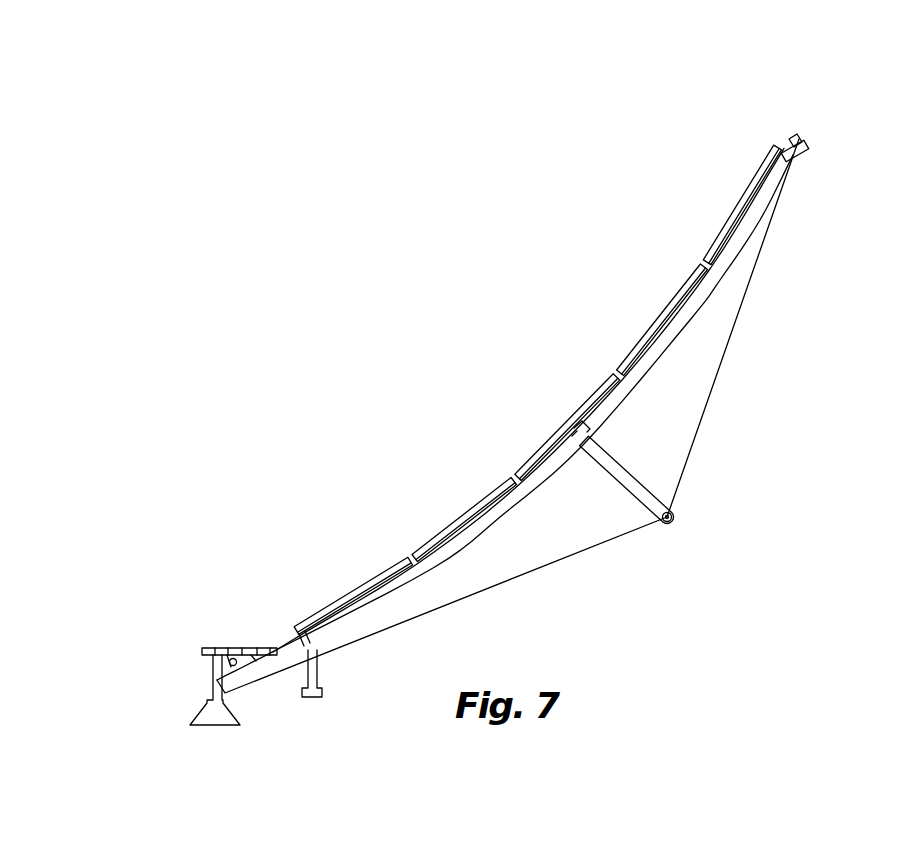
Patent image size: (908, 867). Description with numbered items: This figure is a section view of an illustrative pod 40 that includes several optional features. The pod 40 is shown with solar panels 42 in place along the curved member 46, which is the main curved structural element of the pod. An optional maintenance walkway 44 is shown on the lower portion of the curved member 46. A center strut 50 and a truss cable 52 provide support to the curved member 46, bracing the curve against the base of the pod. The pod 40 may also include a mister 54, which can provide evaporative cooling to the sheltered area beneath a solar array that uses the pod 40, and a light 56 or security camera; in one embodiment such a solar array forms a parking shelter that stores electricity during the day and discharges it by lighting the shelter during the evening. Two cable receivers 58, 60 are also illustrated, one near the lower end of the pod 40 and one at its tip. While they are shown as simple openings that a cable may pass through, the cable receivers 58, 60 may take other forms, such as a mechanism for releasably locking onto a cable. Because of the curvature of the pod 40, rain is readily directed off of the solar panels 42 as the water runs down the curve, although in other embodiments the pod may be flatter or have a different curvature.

The pod 40 is at (522, 327).
The solar panels 42 is at (658, 313).
The maintenance walkway 44 is at (237, 651).
The curved member 46 is at (482, 520).
The center strut 50 is at (645, 497).
The truss cable 52 is at (727, 347).
The mister 54 is at (320, 675).
The light 56 is at (218, 716).
The cable receiver 58 is at (221, 658).
The cable receiver 60 is at (800, 135).